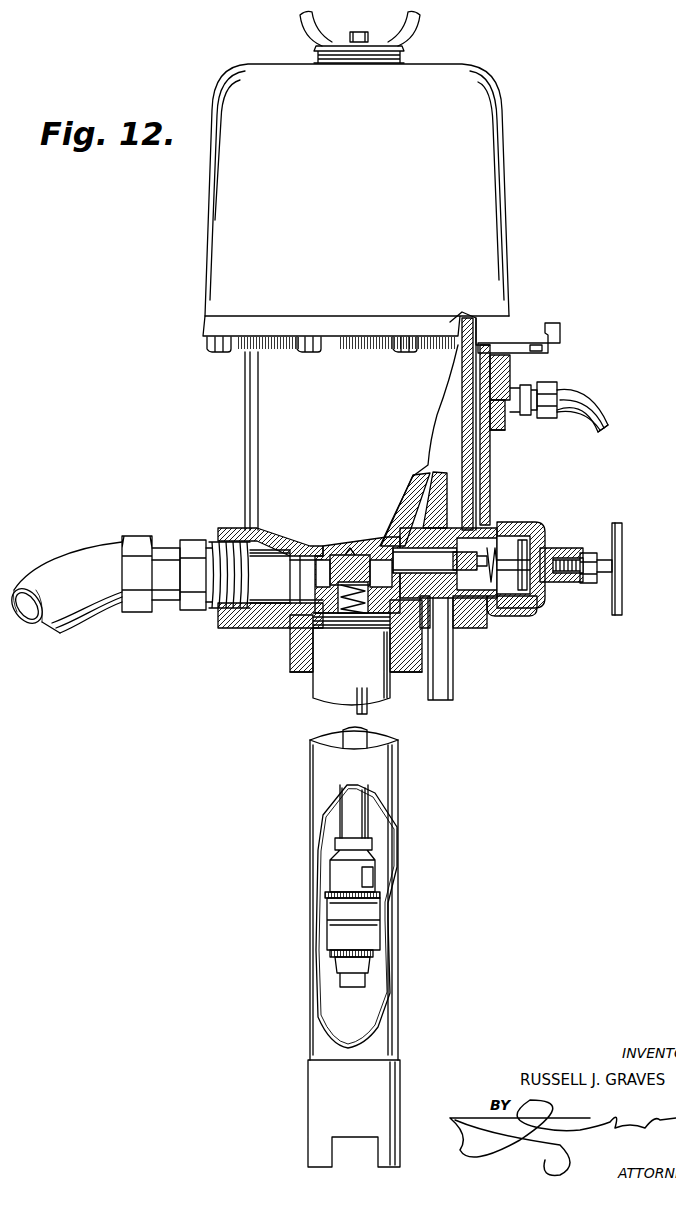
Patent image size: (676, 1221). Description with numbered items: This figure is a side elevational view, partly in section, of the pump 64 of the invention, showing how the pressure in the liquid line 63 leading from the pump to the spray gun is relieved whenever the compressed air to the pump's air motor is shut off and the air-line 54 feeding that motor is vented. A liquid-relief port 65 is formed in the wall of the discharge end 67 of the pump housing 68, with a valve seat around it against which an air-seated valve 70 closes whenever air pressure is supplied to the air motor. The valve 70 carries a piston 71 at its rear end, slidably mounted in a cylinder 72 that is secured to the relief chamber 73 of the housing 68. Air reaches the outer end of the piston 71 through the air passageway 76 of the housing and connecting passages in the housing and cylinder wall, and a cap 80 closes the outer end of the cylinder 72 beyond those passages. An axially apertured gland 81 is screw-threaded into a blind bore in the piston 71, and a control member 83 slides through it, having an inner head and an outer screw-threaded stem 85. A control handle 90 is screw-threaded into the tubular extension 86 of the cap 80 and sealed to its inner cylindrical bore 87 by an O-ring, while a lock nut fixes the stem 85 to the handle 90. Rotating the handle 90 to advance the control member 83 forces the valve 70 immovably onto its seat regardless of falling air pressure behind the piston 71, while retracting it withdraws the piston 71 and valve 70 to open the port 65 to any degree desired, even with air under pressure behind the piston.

The pump 64 is at (538, 204).
The air-line 54 is at (582, 400).
The air passageway 76 is at (480, 452).
The liquid line 63 is at (72, 565).
The liquid-relief port 65 is at (392, 546).
The discharge end 67 is at (312, 602).
The pump housing 68 is at (292, 660).
The relief chamber 73 is at (444, 548).
The piston 71 is at (518, 538).
The cap 80 is at (545, 526).
The axially apertured gland 81 is at (518, 596).
The control member 83 is at (530, 594).
The tubular extension 86 is at (562, 548).
The screw-threaded stem 85 is at (563, 582).
The inner cylindrical bore 87 is at (560, 580).
The control handle 90 is at (620, 528).
The air-seated valve 70 is at (462, 612).
The cylinder 72 is at (497, 618).